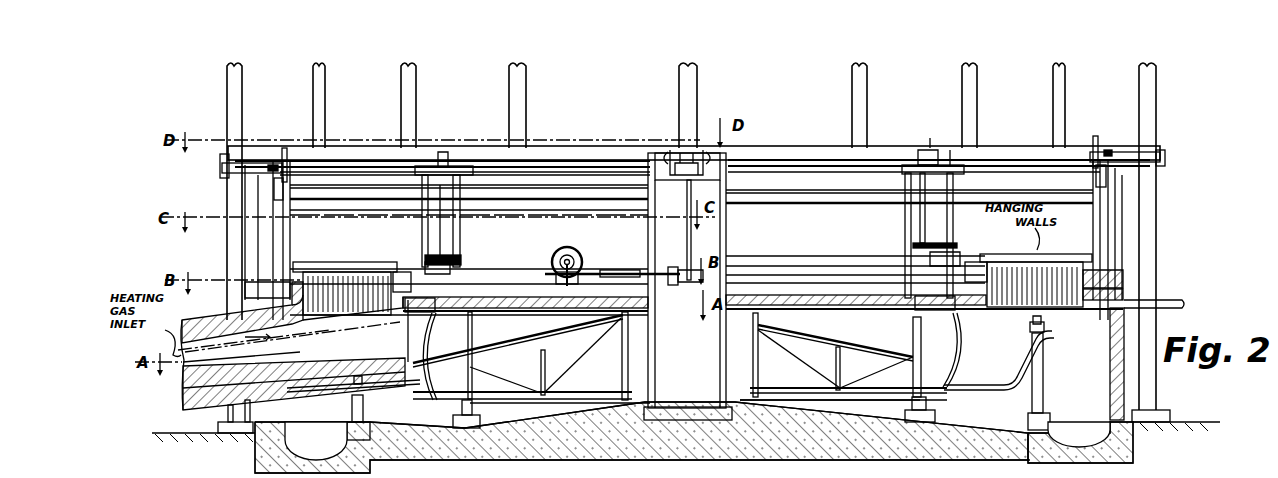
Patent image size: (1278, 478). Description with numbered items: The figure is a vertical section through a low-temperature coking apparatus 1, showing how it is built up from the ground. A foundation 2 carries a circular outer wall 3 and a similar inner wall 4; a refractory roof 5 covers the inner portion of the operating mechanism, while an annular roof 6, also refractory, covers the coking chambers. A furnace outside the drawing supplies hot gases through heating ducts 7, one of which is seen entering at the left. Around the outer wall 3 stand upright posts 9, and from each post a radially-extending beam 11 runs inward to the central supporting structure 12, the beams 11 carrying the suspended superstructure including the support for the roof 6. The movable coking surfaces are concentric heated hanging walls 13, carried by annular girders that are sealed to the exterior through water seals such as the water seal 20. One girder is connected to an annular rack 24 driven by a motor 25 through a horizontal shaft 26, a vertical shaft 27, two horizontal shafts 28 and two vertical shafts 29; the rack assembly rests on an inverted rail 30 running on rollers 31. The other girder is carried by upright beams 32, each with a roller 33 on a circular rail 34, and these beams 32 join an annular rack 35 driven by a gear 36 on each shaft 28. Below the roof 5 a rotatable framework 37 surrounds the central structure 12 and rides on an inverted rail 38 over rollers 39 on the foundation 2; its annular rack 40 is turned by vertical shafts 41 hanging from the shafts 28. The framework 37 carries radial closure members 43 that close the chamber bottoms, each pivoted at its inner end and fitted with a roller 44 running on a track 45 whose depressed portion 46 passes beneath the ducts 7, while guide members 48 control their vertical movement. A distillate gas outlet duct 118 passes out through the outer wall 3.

The low-temperature coking apparatus 1 is at (770, 88).
The foundation 2 is at (860, 460).
The circular outer wall 3 is at (1124, 388).
The inner wall 4 is at (979, 309).
The roof 5 is at (773, 296).
The annular roof 6 is at (328, 263).
The heating gas supply duct 7 is at (182, 370).
The upright post 9 is at (227, 102).
The radially-extending beam 11 is at (757, 147).
The central supporting structure 12 is at (648, 180).
The heated hanging wall 13 is at (316, 326).
The water seal 20 is at (246, 296).
The annular rack 24 is at (972, 262).
The driving motor 25 is at (574, 257).
The horizontal shaft 26 is at (636, 271).
The vertical shaft 27 is at (691, 256).
The horizontal shaft 28 is at (548, 162).
The vertical shaft 29 is at (422, 238).
The inverted rail 30 is at (487, 282).
The roller 31 is at (440, 312).
The upright beam 32 is at (258, 238).
The roller 33 is at (273, 191).
The circular rail 34 is at (340, 200).
The annular rack 35 is at (265, 176).
The gear 36 is at (272, 158).
The rotatable framework 37 is at (532, 382).
The inverted rail 38 is at (866, 401).
The roller 39 is at (457, 407).
The annular rack 40 is at (484, 314).
The vertical shaft 41 is at (481, 236).
The closure member 43 is at (320, 389).
The roller 44 is at (363, 382).
The track 45 is at (424, 406).
The depressed portion 46 is at (964, 375).
The guide member 48 is at (430, 342).
The pipe 118 is at (1173, 310).